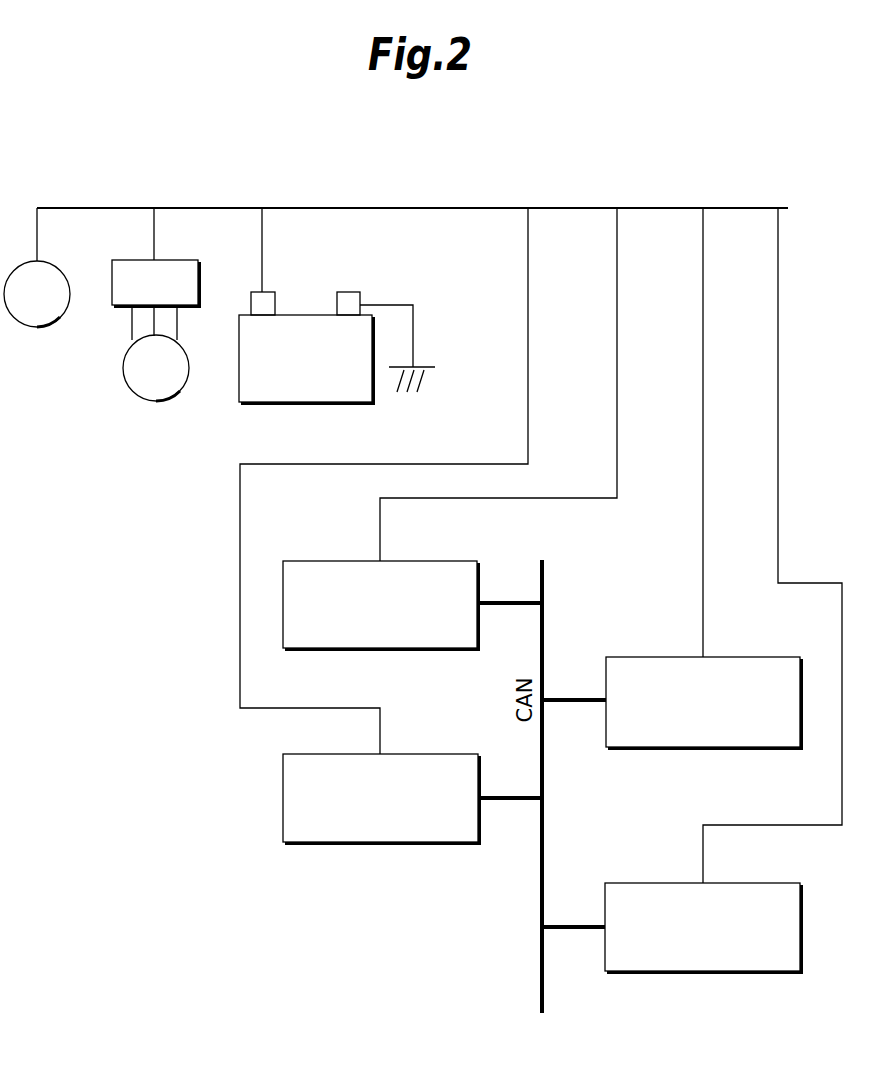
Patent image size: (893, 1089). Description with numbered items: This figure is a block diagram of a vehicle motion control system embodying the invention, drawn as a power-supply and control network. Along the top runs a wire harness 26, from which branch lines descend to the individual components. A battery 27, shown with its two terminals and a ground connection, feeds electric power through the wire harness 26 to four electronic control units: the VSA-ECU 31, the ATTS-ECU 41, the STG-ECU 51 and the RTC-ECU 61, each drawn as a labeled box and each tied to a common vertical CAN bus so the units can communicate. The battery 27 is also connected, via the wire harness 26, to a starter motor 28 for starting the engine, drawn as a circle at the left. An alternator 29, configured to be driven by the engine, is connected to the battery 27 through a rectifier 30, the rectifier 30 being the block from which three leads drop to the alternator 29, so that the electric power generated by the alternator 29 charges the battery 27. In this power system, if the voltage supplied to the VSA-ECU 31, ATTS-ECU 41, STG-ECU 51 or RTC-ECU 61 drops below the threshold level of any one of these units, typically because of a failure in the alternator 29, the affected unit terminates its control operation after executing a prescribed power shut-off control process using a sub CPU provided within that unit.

The wire harness 26 is at (445, 208).
The battery 27 is at (316, 402).
The starter motor 28 is at (36, 328).
The alternator 29 is at (155, 402).
The rectifier 30 is at (163, 260).
The VSA-ECU 31 is at (411, 561).
The ATTS-ECU 41 is at (411, 754).
The STG-ECU 51 is at (733, 657).
The RTC-ECU 61 is at (733, 883).